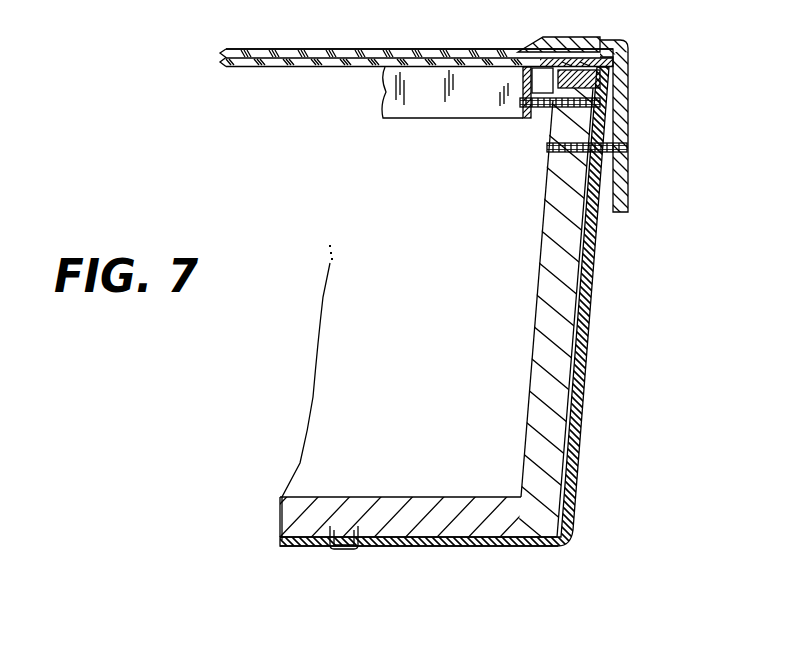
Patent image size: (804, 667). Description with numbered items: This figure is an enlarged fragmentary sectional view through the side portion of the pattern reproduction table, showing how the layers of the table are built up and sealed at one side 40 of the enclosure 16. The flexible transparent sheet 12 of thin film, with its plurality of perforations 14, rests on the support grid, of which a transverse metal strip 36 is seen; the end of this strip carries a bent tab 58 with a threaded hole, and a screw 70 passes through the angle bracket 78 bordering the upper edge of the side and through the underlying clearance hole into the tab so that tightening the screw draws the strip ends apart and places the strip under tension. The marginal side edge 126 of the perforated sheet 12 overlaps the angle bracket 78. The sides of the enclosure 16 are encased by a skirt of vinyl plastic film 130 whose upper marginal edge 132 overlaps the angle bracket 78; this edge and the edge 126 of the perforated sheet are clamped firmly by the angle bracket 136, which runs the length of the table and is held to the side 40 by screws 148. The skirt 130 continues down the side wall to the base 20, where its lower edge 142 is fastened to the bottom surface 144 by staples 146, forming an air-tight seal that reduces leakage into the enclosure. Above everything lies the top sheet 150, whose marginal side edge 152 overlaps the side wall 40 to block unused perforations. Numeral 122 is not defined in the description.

The flexible transparent sheet 12 is at (256, 67).
The perforations 14 is at (312, 67).
The enclosure 16 is at (266, 511).
The base 20 is at (447, 497).
The transverse metal strips 36 is at (392, 118).
The side of the enclosure 40 is at (543, 318).
The bent tabs 58 is at (523, 82).
The screws 70 is at (545, 108).
The angle brackets 78 is at (560, 79).
The panel 122 is at (200, 1).
The marginal side edges 126 is at (600, 41).
The skirt of vinyl plastic film 130 is at (591, 325).
The upper marginal edge 132 is at (600, 80).
The angle bracket 136 is at (627, 104).
The lower edge of the skirt 142 is at (305, 546).
The bottom surface 144 is at (288, 538).
The staples 146 is at (345, 549).
The screws 148 is at (628, 148).
The top sheet 150 is at (375, 49).
The marginal side edges 152 is at (580, 37).